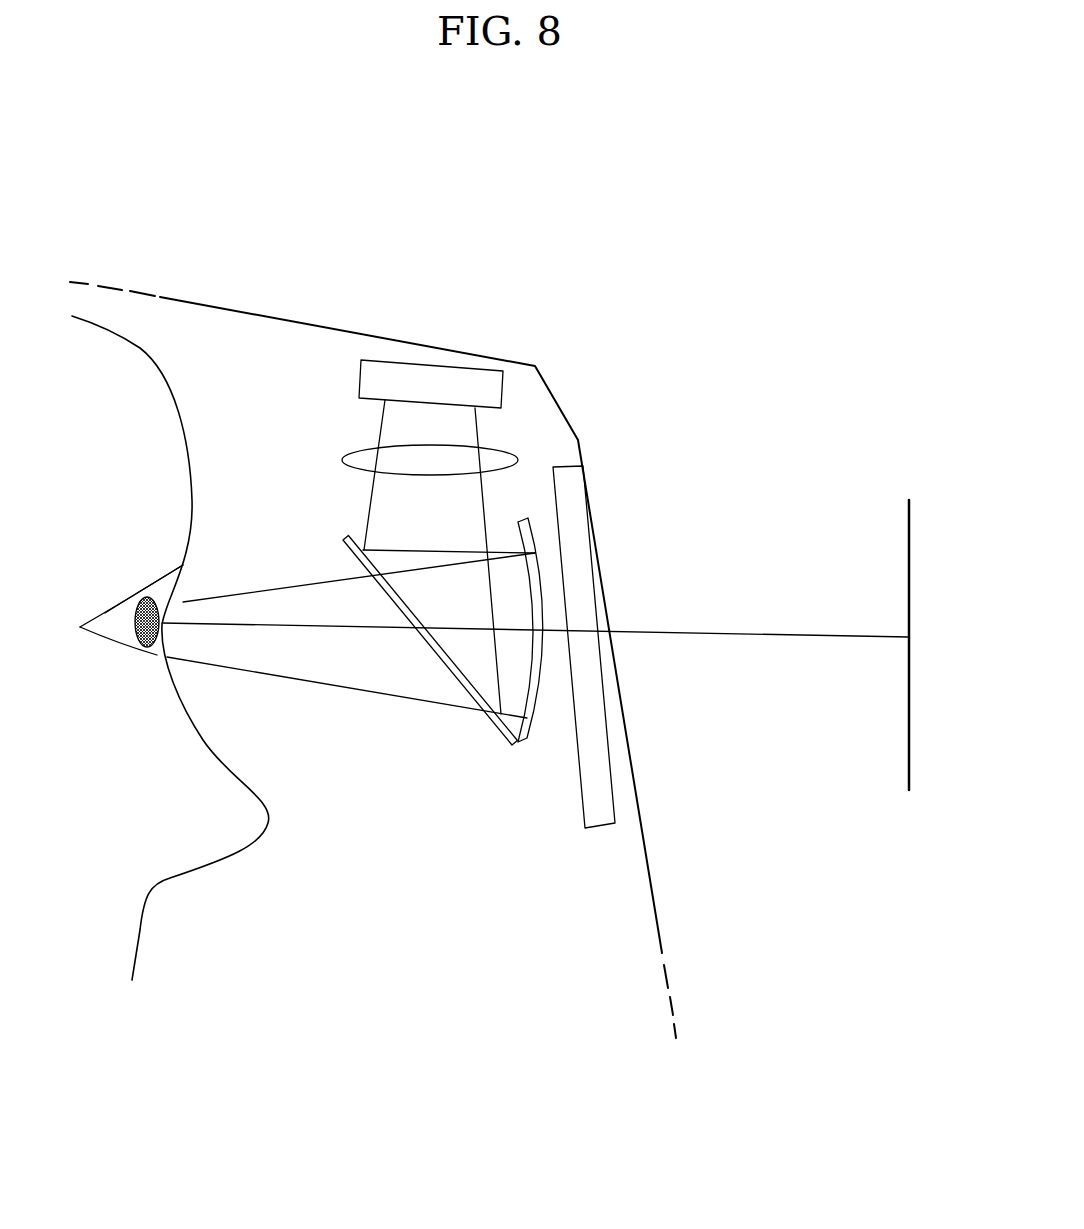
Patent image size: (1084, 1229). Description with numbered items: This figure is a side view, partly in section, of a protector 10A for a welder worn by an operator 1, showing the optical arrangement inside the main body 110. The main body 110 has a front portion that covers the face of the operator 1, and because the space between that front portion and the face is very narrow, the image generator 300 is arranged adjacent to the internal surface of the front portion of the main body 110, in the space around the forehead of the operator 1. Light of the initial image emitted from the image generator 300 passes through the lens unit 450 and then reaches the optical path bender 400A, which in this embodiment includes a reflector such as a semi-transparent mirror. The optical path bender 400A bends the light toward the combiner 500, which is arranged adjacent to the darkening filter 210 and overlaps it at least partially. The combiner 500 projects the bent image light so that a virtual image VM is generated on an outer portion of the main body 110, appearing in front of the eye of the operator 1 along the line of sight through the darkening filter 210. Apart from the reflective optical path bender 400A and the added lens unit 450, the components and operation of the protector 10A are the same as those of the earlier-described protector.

The operator 1 is at (112, 330).
The protector for welder 10A is at (750, 307).
The main body 110 is at (293, 323).
The image generator 300 is at (425, 363).
The lens unit 450 is at (357, 455).
The optical path bender 400A is at (343, 538).
The combiner 500 is at (525, 740).
The darkening filter 210 is at (582, 573).
The virtual image VM is at (910, 500).